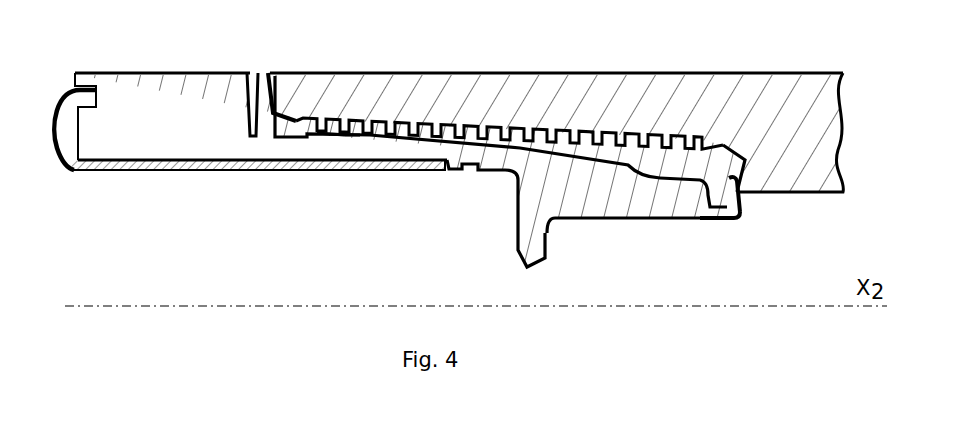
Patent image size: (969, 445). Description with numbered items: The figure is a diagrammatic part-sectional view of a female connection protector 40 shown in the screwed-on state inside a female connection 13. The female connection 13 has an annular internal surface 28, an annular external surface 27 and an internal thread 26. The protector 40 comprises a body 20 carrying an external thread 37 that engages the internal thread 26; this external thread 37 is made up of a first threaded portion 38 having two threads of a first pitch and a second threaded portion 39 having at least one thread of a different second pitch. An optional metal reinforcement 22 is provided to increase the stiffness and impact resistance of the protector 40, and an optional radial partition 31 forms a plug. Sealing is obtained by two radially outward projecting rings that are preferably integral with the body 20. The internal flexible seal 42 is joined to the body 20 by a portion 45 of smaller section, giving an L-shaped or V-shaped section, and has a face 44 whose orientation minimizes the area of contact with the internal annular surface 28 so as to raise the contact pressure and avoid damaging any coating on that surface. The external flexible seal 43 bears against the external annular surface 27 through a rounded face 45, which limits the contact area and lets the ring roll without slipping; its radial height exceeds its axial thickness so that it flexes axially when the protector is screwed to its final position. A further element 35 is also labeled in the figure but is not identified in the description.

The female connection 13 is at (742, 74).
The female connection protector 40 is at (119, 73).
The body 20 is at (219, 150).
The metal reinforcement 22 is at (150, 173).
The external flexible seal 43 is at (247, 73).
The rounded face 45 is at (270, 73).
The annular external surface 27 is at (283, 95).
The internal thread 26 is at (526, 118).
The second threaded portion 39 is at (322, 136).
The external thread 37 is at (336, 137).
The first threaded portion 38 is at (352, 137).
The annular internal surface 28 is at (747, 168).
The face 44 is at (741, 200).
The internal flexible seal 42 is at (739, 212).
The bottom wall 35 is at (721, 220).
The radial partition 31 is at (520, 255).